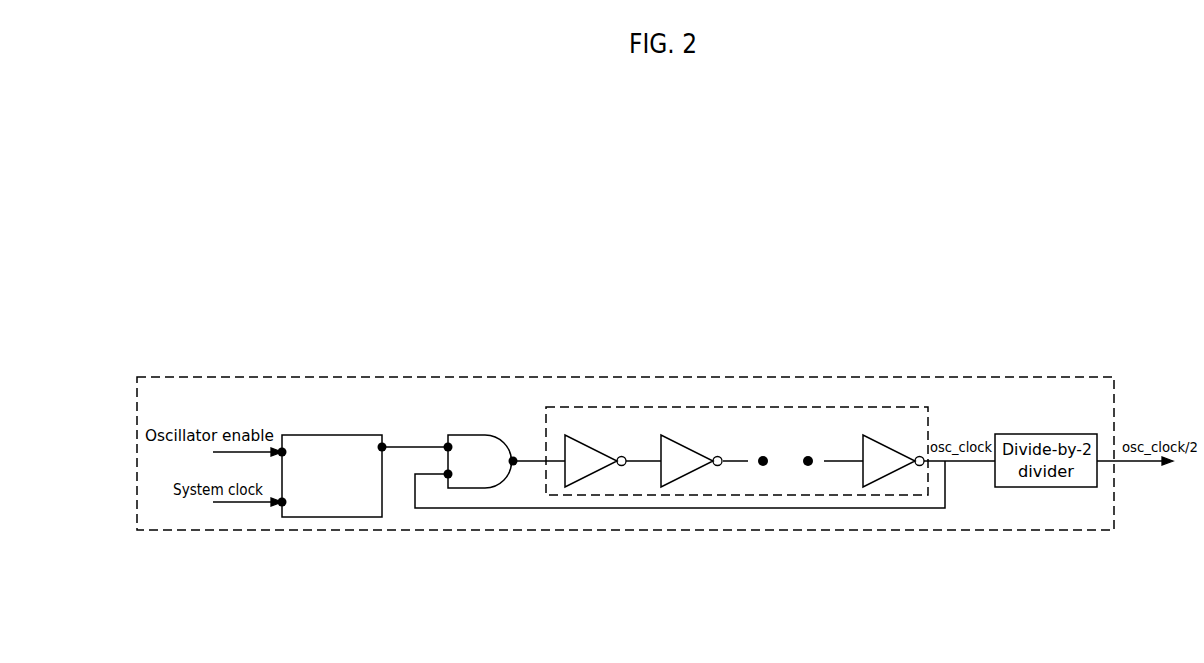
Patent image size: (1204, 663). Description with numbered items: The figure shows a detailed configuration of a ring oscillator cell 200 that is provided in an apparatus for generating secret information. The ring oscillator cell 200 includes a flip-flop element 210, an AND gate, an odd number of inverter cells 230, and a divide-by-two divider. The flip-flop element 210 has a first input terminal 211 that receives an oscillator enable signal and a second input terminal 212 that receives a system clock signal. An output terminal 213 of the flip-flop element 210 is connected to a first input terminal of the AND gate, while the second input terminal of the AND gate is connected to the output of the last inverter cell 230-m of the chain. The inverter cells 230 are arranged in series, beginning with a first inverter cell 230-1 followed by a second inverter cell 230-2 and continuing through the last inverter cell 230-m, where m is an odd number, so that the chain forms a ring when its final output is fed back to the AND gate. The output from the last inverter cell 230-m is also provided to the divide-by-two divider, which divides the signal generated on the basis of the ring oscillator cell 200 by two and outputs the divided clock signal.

The ring oscillator cell 200 is at (990, 377).
The flip-flop element 210 is at (330, 435).
The first input terminal 211 is at (299, 452).
The second input terminal 212 is at (299, 504).
The output terminal 213 is at (367, 453).
The inverter cells 230 is at (768, 407).
The first inverter cell 230-1 is at (594, 445).
The second inverter cell 230-2 is at (689, 445).
The last inverter cell 230-m is at (894, 445).